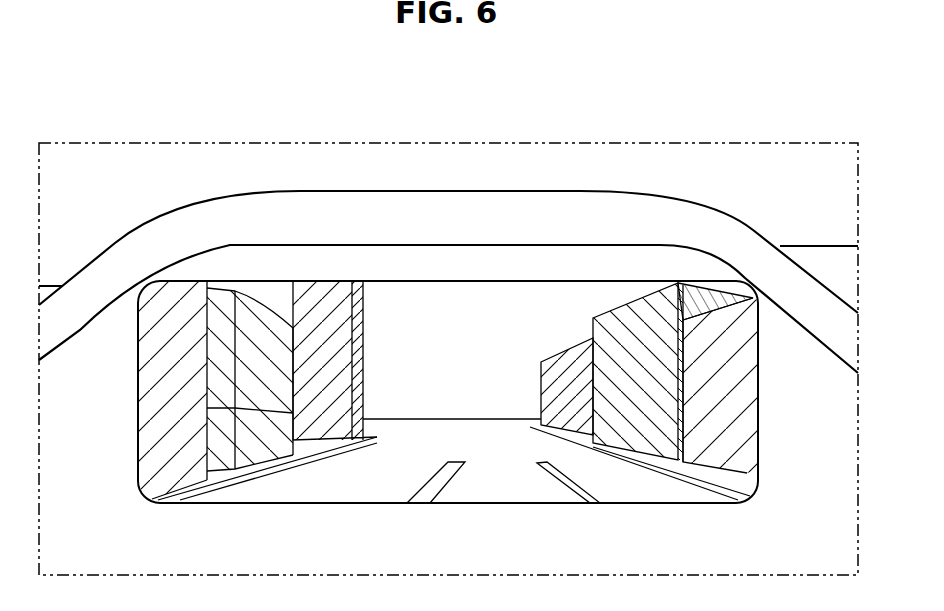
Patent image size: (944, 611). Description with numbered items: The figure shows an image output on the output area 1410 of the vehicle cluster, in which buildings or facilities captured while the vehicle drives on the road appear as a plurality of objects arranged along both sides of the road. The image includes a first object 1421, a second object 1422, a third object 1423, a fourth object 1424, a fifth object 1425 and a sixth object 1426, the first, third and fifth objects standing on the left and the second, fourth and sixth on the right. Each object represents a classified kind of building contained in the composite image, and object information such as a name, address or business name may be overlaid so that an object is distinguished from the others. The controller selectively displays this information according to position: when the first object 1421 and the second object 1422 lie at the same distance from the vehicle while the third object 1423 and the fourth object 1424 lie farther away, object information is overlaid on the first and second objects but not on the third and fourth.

The output area 1410 is at (512, 278).
The first object 1421 is at (170, 356).
The second object 1422 is at (727, 370).
The third object 1423 is at (268, 328).
The fourth object 1424 is at (627, 320).
The fifth object 1425 is at (325, 293).
The sixth object 1426 is at (558, 367).